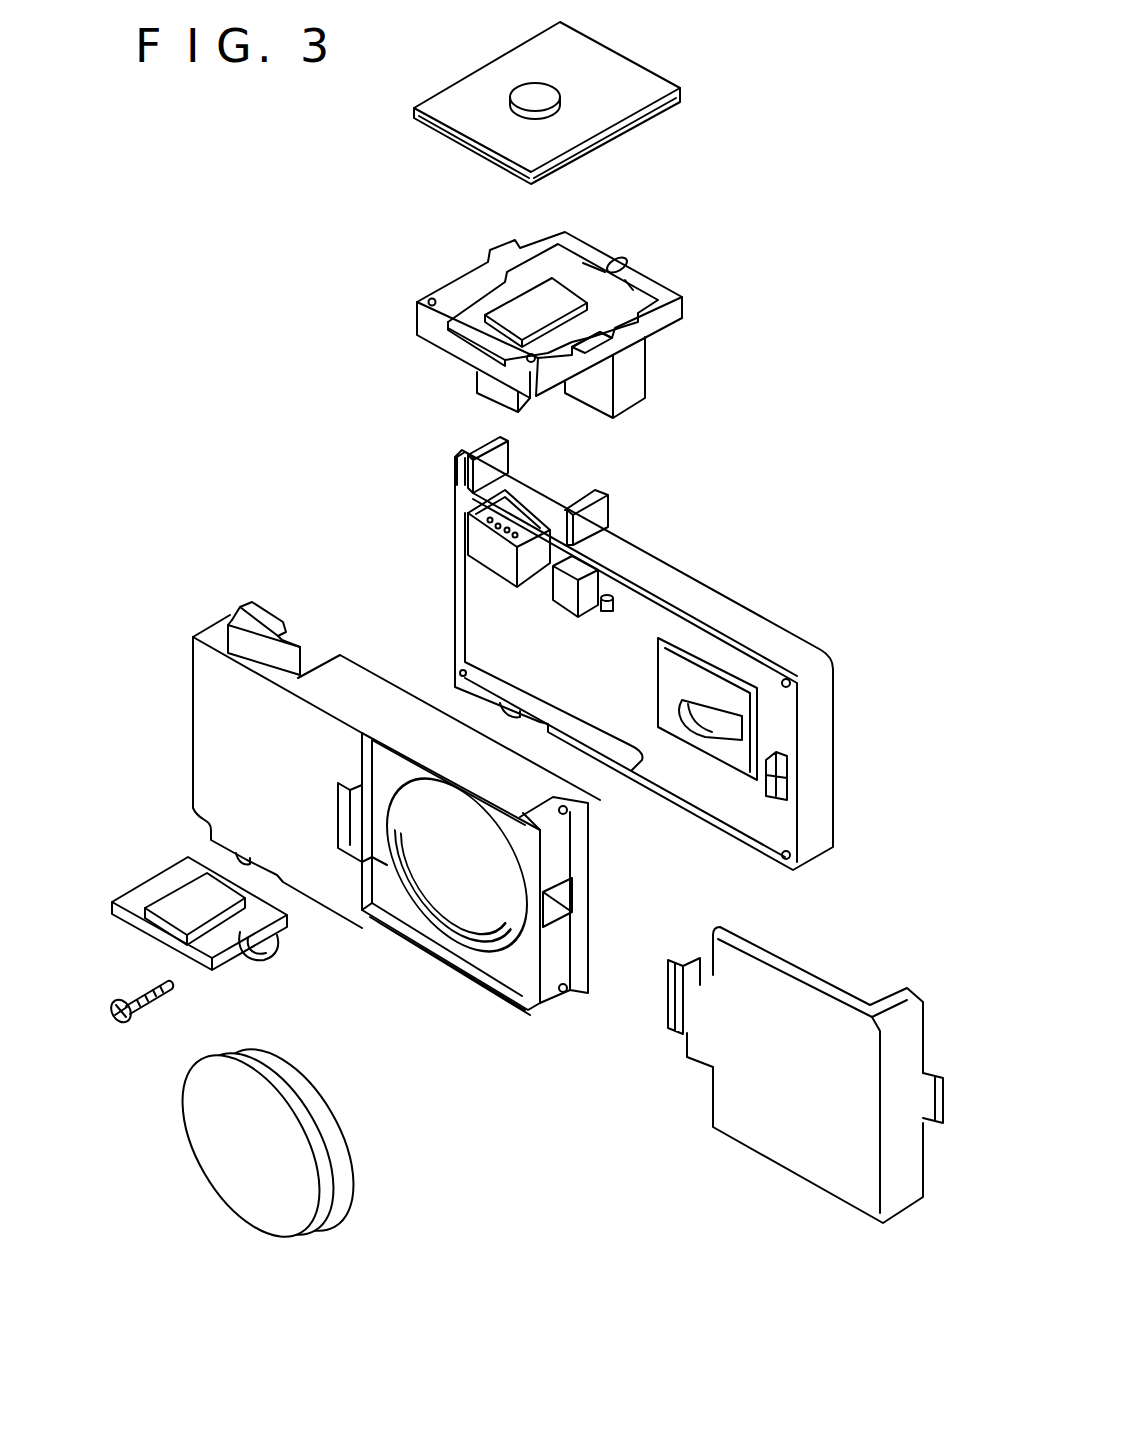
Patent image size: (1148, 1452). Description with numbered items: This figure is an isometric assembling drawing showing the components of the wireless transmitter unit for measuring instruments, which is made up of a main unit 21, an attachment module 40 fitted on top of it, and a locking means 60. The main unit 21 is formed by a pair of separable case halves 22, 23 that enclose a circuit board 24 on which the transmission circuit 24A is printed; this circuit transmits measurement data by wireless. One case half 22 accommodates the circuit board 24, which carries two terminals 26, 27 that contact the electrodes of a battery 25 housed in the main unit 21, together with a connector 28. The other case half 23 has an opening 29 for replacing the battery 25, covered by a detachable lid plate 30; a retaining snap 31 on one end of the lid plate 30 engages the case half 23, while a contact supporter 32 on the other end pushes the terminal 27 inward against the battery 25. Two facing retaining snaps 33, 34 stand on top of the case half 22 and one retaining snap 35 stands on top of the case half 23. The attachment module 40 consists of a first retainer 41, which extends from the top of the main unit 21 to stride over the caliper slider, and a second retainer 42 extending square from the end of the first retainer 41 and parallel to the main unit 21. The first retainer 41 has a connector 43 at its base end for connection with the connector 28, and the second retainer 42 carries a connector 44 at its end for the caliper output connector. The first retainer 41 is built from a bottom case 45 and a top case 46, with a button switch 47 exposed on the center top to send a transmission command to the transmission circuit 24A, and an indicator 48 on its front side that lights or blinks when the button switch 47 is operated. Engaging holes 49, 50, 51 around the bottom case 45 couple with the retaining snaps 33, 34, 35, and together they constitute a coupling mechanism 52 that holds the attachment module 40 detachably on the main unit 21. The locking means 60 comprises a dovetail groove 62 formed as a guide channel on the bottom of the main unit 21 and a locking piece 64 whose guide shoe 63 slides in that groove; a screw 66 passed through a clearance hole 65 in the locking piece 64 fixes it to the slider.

The main unit 21 is at (347, 453).
The case half 22 is at (452, 520).
The case half 23 is at (260, 605).
The circuit board 24 is at (652, 622).
The transmission circuit 24A is at (520, 632).
The battery 25 is at (272, 1222).
The terminal 26 is at (712, 735).
The terminal 27 is at (790, 792).
The connector 28 is at (478, 545).
The opening 29 is at (466, 962).
The lid plate 30 is at (785, 1075).
The retaining snap 31 is at (668, 1010).
The contact supporter 32 is at (940, 1075).
The retaining snap 33 is at (508, 447).
The retaining snap 34 is at (600, 497).
The retaining snap 35 is at (386, 716).
The attachment module 40 is at (777, 122).
The first retainer 41 is at (708, 158).
The second retainer 42 is at (650, 383).
The connector 43 is at (488, 398).
The connector 44 is at (628, 418).
The bottom case 45 is at (597, 244).
The top case 46 is at (640, 110).
The button switch 47 is at (535, 92).
The indicator 48 is at (628, 264).
The engaging hole 49 is at (487, 292).
The engaging hole 50 is at (628, 344).
The engaging hole 51 is at (478, 346).
The coupling mechanism 52 is at (465, 455).
The locking means 60 is at (152, 808).
The dovetail groove 62 is at (508, 716).
The guide shoe 63 is at (174, 916).
The locking piece 64 is at (212, 962).
The clearance hole 65 is at (256, 958).
The screw 66 is at (128, 1024).